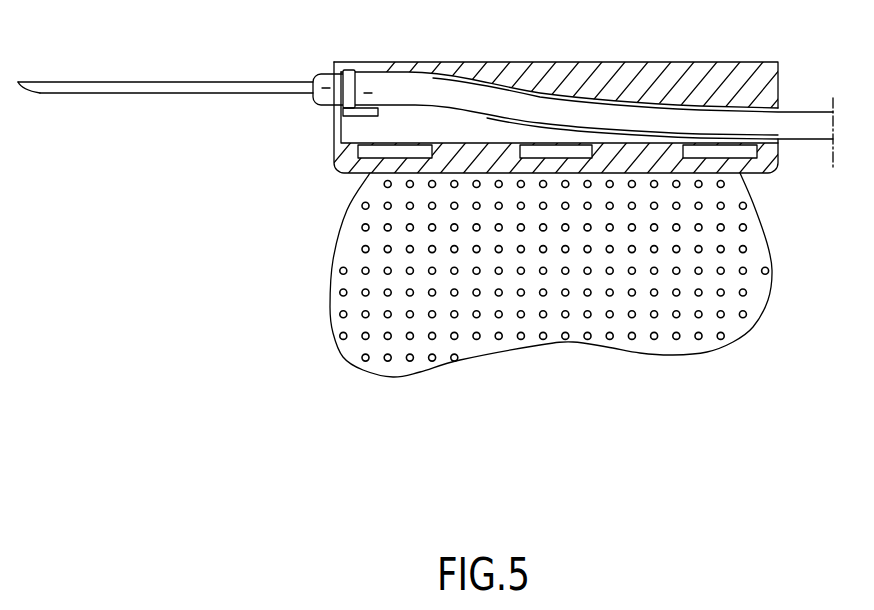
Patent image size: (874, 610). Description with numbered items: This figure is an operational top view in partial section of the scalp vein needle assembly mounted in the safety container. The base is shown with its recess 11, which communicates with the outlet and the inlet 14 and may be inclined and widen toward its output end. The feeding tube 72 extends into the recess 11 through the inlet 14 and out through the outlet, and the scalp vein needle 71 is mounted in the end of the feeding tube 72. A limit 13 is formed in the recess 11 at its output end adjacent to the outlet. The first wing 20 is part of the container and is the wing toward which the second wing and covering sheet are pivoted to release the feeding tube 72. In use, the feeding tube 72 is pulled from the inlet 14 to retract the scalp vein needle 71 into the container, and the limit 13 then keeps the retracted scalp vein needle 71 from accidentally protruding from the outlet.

The recess 11 is at (415, 118).
The limit 13 is at (372, 112).
The inlet 14 is at (778, 108).
The first wing 20 is at (728, 328).
The scalp vein needle 71 is at (157, 82).
The feeding tube 72 is at (808, 135).